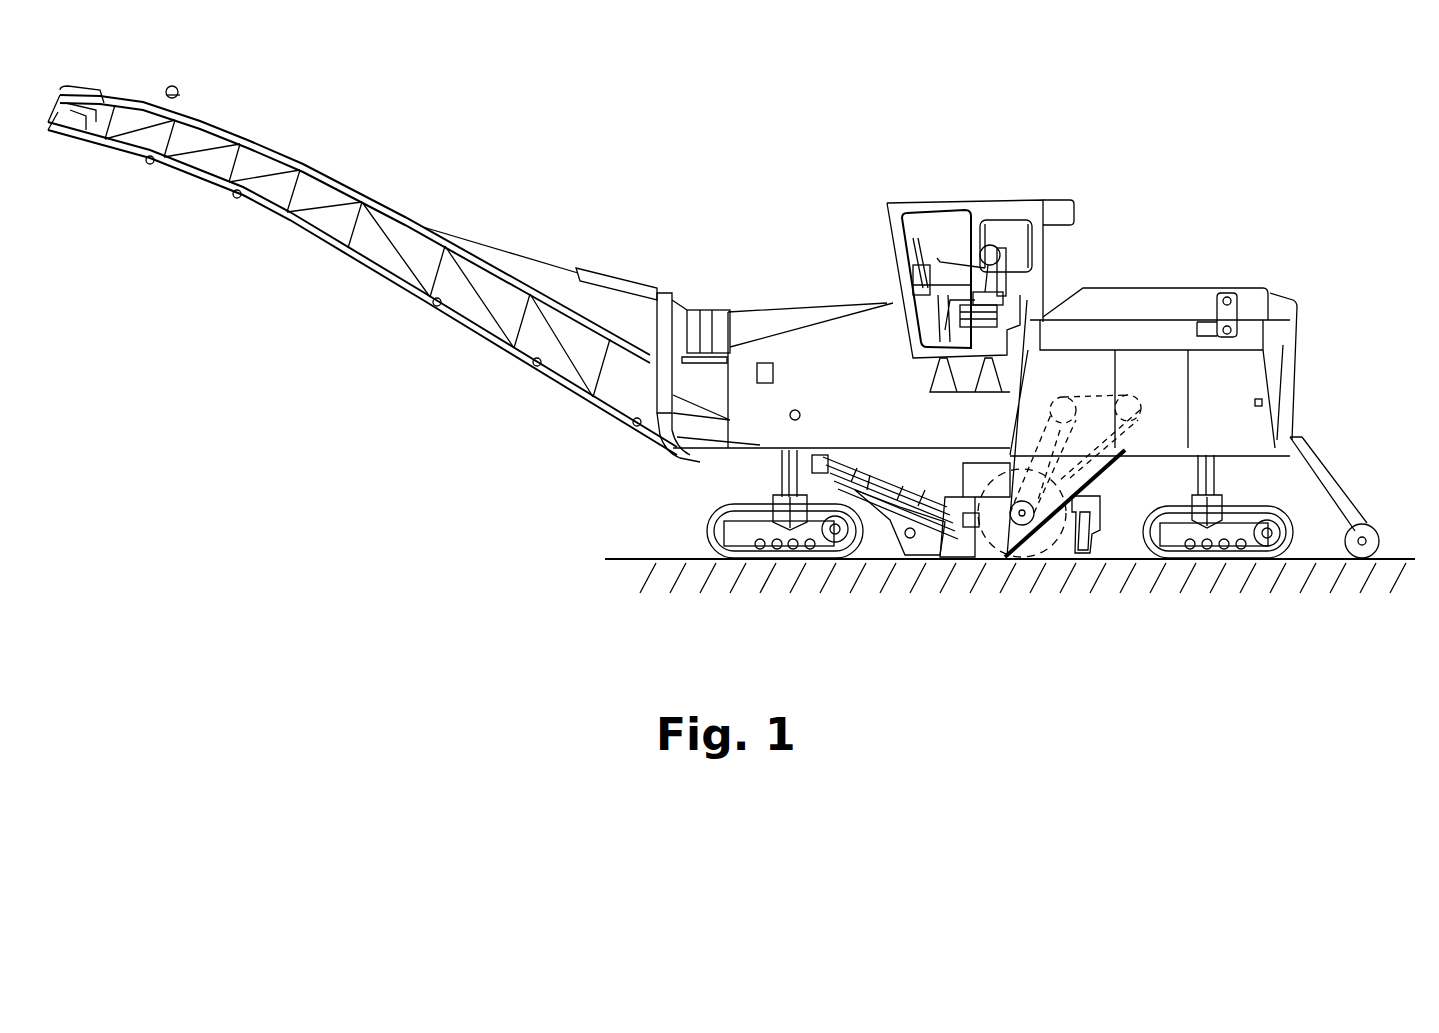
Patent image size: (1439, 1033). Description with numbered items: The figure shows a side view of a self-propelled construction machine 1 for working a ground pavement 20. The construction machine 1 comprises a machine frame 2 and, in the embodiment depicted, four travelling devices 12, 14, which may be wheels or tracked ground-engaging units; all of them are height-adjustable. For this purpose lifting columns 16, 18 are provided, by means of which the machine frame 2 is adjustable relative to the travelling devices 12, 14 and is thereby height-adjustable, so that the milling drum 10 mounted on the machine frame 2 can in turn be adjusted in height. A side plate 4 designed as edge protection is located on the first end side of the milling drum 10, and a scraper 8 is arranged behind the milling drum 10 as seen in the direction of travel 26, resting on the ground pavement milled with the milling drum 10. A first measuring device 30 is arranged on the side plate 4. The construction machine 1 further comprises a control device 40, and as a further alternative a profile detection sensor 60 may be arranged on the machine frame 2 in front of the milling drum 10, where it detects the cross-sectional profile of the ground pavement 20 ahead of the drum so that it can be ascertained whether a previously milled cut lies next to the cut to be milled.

The construction machine 1 is at (1257, 178).
The machine frame 2 is at (1160, 303).
The side plate 4 is at (988, 548).
The scraper 8 is at (1083, 545).
The milling drum 10 is at (1052, 548).
The travelling device 12 is at (1268, 554).
The travelling device 14 is at (820, 554).
The lifting column 16 is at (1215, 483).
The lifting column 18 is at (787, 483).
The ground pavement 20 is at (1410, 559).
The direction of travel 26 is at (868, 100).
The first measuring device 30 is at (972, 530).
The control device 40 is at (764, 361).
The profile detection sensor 60 is at (815, 453).